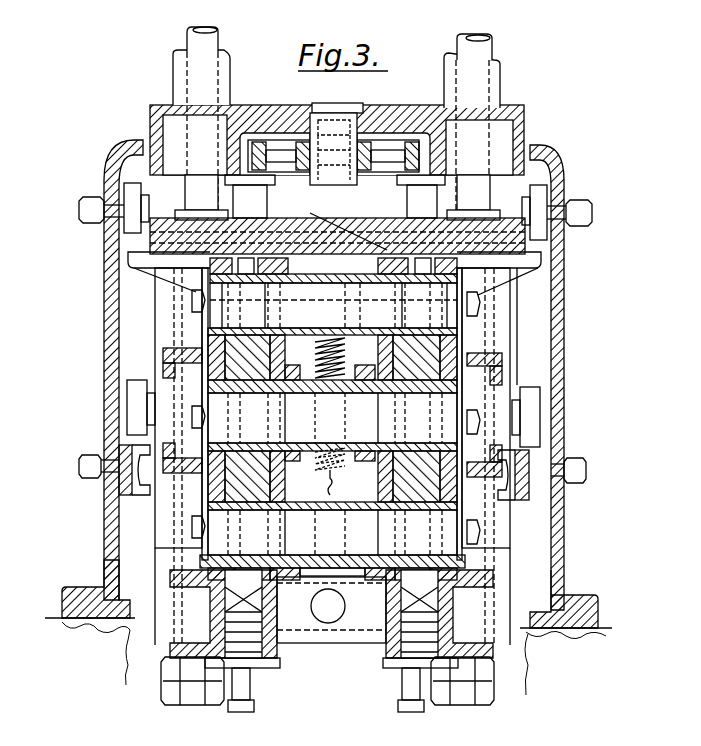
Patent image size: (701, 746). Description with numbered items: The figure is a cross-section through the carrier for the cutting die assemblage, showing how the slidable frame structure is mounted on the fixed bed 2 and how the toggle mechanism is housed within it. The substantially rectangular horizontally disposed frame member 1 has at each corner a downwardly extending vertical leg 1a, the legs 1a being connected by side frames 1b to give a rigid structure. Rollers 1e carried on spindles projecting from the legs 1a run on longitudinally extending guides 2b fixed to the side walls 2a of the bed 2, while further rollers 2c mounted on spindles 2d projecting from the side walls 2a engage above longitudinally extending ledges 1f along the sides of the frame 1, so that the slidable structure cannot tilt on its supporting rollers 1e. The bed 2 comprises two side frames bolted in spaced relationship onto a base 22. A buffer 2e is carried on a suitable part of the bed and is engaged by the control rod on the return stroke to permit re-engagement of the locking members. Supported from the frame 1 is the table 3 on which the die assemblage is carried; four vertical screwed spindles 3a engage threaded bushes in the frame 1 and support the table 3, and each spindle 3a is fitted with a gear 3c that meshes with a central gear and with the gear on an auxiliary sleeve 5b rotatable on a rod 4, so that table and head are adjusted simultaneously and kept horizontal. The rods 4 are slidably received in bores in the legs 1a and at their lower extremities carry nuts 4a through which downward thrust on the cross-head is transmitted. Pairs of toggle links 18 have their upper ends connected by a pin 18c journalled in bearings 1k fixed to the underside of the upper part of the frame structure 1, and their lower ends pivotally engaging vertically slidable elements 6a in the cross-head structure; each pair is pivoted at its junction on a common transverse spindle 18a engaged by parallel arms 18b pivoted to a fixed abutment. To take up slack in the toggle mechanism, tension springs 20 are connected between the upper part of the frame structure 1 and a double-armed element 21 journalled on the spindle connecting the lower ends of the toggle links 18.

The frame member 1 is at (341, 222).
The vertical leg 1a is at (165, 301).
The side frame 1b is at (166, 362).
The roller 1e is at (135, 398).
The ledge 1f is at (128, 255).
The bearing 1k is at (285, 245).
The bed 2 is at (68, 605).
The side wall 2a is at (104, 540).
The guide 2b is at (520, 510).
The roller 2c is at (131, 195).
The spindle 2d is at (95, 196).
The buffer 2e is at (556, 425).
The table 3 is at (386, 110).
The screwed spindle 3a is at (262, 199).
The gear 3c is at (270, 150).
The rod 4 is at (210, 42).
The nut 4a is at (172, 698).
The auxiliary sleeve 5b is at (230, 74).
The vertically slidable element 6a is at (252, 583).
The toggle link 18 is at (252, 395).
The transverse spindle 18a is at (332, 532).
The parallel arm 18b is at (316, 370).
The pin 18c is at (333, 293).
The tension spring 20 is at (346, 360).
The double-armed element 21 is at (348, 557).
The base 22 is at (334, 658).